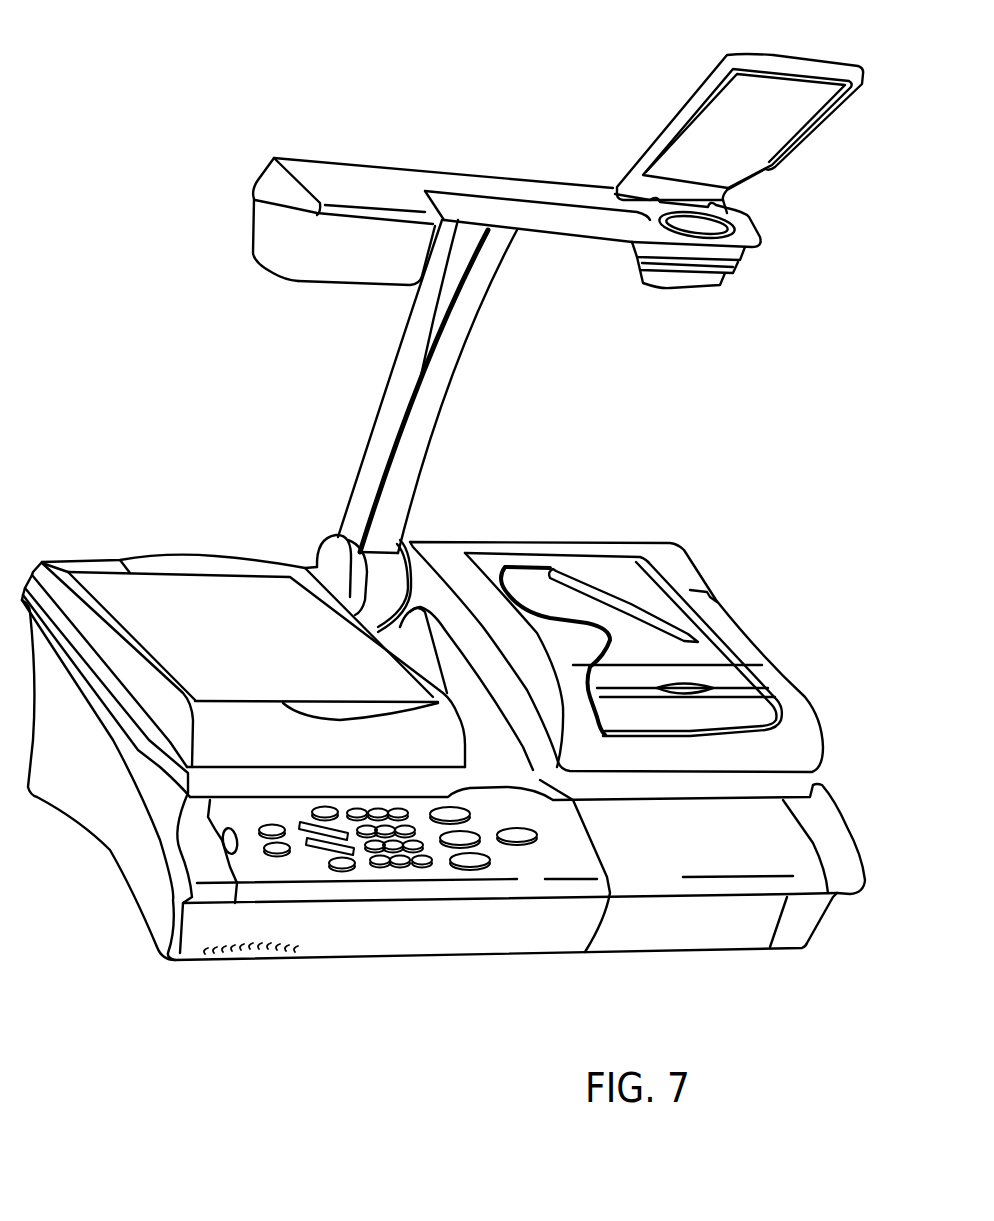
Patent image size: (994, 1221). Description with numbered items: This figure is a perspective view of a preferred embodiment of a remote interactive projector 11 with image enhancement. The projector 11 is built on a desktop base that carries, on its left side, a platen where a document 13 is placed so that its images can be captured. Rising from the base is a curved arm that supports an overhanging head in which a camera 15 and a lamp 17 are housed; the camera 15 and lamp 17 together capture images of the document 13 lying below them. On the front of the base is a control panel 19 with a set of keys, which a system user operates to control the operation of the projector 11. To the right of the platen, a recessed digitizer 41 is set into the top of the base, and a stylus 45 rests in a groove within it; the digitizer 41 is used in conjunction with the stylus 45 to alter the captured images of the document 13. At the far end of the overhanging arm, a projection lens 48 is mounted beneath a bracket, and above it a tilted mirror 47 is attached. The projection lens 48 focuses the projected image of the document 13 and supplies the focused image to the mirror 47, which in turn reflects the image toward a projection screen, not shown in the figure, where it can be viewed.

The remote interactive projector 11 is at (206, 28).
The document 13 is at (95, 572).
The camera 15 is at (372, 287).
The lamp 17 is at (307, 283).
The control panel 19 is at (313, 870).
The digitizer 41 is at (650, 570).
The stylus 45 is at (663, 617).
The mirror 47 is at (765, 160).
The projection lens 48 is at (723, 287).